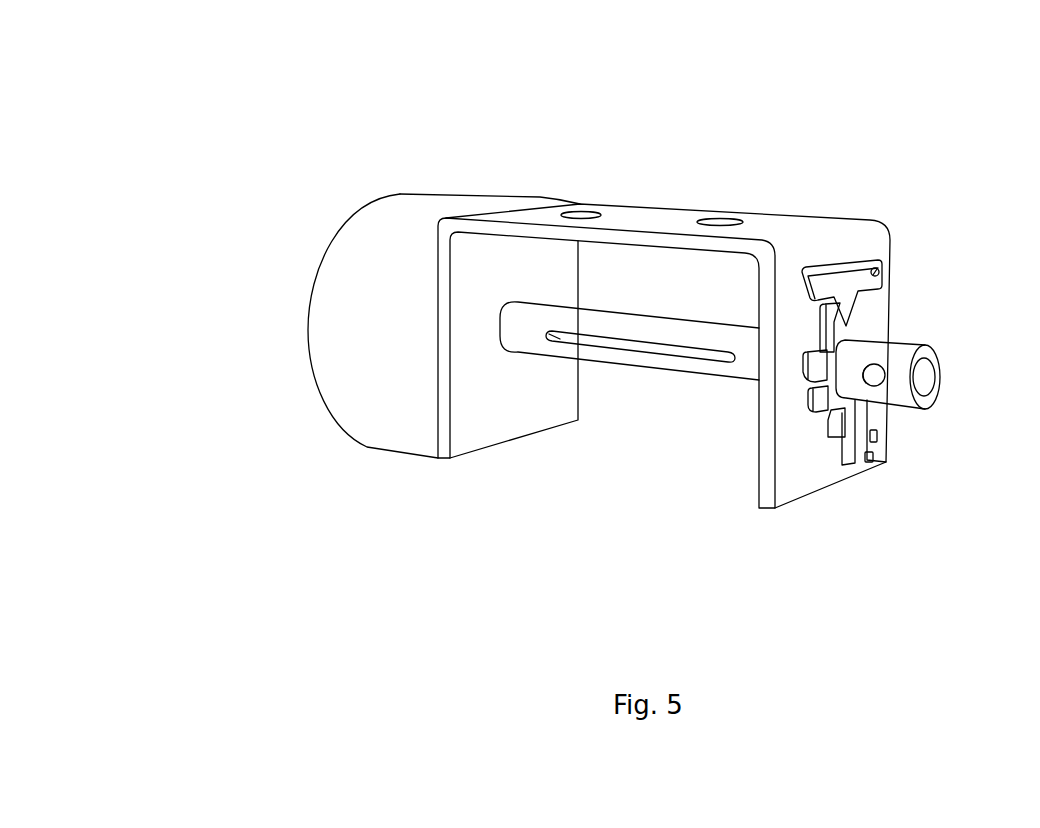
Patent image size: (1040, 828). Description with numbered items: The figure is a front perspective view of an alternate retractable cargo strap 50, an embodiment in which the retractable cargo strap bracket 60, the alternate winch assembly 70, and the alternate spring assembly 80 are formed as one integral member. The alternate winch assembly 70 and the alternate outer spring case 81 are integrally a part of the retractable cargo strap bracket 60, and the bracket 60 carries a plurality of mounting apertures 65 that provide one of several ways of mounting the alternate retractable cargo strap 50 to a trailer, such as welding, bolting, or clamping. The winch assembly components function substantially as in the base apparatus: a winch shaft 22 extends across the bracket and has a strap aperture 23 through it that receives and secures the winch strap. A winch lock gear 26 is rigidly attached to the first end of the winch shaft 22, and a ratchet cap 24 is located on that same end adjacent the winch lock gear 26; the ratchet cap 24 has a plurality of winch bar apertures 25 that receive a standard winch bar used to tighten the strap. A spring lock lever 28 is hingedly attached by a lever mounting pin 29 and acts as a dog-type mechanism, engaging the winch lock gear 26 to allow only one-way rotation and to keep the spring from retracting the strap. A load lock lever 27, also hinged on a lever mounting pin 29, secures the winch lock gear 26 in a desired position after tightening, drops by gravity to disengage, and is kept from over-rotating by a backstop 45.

The alternate retractable cargo strap 50 is at (245, 118).
The retractable cargo strap bracket 60 is at (671, 191).
The mounting apertures 65 is at (583, 212).
The alternate spring assembly 80 is at (326, 435).
The alternate outer spring case 81 is at (333, 347).
The winch shaft 22 is at (660, 372).
The strap aperture 23 is at (635, 342).
The alternate winch assembly 70 is at (900, 290).
The spring lock lever 28 is at (840, 280).
The lever mounting pin 29 is at (880, 268).
The winch lock gear 26 is at (833, 403).
The winch bar apertures 25 is at (890, 345).
The ratchet cap 24 is at (940, 380).
The load lock lever 27 is at (845, 460).
The backstop 45 is at (875, 440).